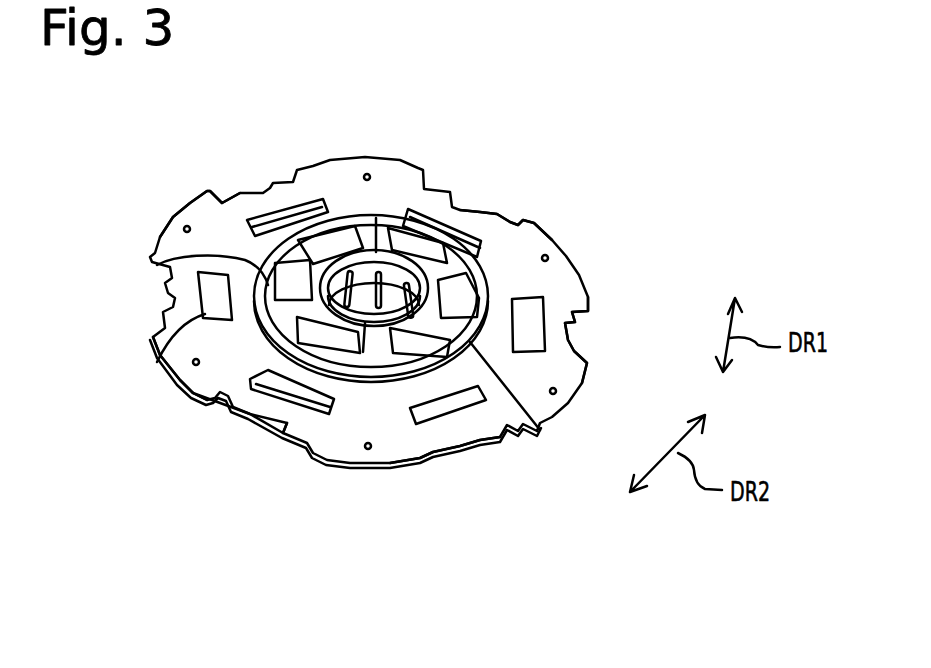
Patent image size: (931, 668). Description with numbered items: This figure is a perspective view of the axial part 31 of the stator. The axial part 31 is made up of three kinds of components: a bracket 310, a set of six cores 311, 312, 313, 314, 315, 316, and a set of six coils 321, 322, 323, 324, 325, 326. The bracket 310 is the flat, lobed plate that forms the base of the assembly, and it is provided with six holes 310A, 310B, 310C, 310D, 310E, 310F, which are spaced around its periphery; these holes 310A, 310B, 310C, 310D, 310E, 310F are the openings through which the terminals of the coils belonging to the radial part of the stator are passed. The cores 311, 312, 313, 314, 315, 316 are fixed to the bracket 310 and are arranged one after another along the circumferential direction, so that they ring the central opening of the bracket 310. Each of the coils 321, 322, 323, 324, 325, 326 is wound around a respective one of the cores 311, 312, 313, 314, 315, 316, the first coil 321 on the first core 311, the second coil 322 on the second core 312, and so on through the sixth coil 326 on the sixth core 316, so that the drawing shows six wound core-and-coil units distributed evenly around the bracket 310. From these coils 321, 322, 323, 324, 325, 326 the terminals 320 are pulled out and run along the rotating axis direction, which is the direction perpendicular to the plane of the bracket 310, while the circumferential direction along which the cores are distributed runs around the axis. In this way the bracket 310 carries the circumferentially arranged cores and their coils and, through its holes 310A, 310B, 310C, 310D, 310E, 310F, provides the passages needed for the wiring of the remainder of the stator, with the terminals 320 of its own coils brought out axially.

The axial part 31 is at (409, 88).
The bracket 310 is at (567, 388).
The hole 310A is at (565, 322).
The hole 310B is at (497, 213).
The hole 310C is at (250, 192).
The hole 310D is at (163, 356).
The hole 310E is at (228, 417).
The hole 310F is at (462, 430).
The core 311 is at (462, 292).
The core 312 is at (437, 245).
The core 313 is at (330, 240).
The core 314 is at (288, 287).
The core 315 is at (335, 333).
The core 316 is at (505, 400).
The terminals 320 is at (378, 330).
The coil 321 is at (483, 298).
The coil 322 is at (475, 212).
The coil 323 is at (268, 220).
The coil 324 is at (170, 266).
The coil 325 is at (283, 320).
The coil 326 is at (424, 412).